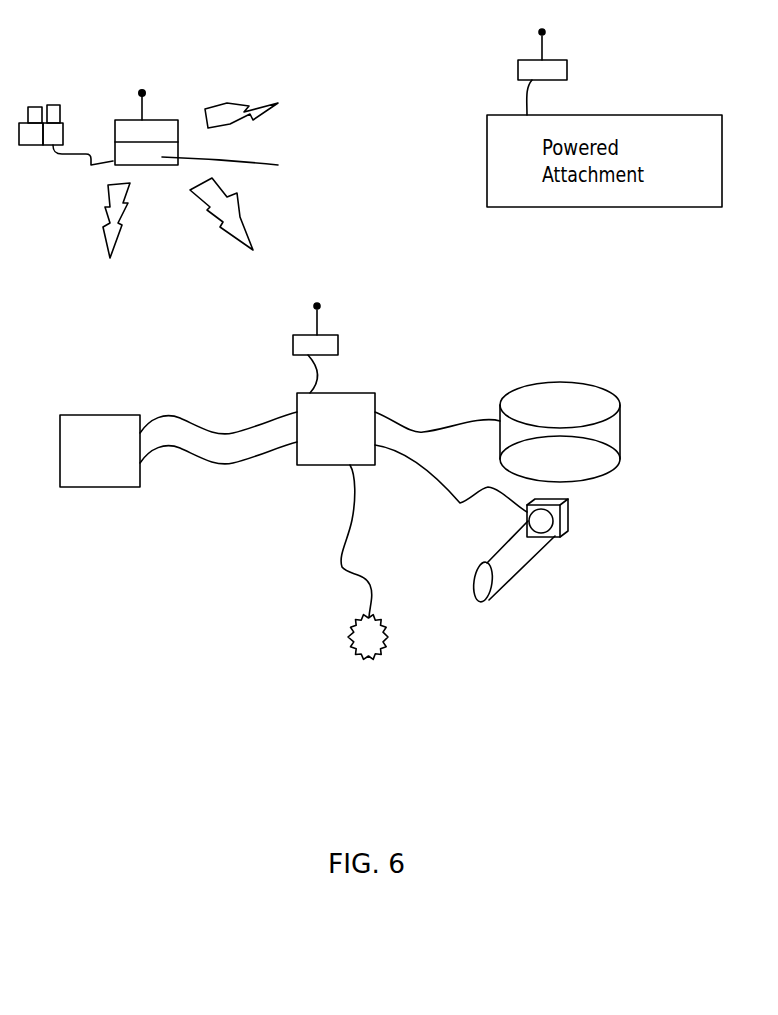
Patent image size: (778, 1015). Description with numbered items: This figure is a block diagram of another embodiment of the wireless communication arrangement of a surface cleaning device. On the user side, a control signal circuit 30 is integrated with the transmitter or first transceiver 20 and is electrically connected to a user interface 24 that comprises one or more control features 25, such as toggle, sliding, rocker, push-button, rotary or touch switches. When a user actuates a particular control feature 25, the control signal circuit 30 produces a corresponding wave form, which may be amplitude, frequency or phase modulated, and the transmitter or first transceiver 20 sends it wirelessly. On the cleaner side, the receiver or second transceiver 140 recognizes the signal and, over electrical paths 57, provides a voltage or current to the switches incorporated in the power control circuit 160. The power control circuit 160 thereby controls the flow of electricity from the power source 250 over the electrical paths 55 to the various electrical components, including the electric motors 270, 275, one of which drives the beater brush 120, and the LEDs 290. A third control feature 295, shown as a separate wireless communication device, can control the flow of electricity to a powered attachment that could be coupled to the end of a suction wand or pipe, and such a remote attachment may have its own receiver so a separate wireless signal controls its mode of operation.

The transmitter or first transceiver 20 is at (158, 128).
The user interface 24 is at (37, 162).
The control feature 25 is at (32, 107).
The control signal circuit 30 is at (247, 171).
The electrical paths 55 is at (260, 430).
The electrical paths 57 is at (297, 372).
The beater brush 120 is at (507, 563).
The receiver or second transceiver 140 is at (327, 342).
The power control circuit 160 is at (343, 413).
The power source 250 is at (85, 473).
The electric motor 270 is at (580, 402).
The electric motor 275 is at (560, 513).
The LEDs 290 is at (375, 638).
The third control feature 295 is at (548, 72).